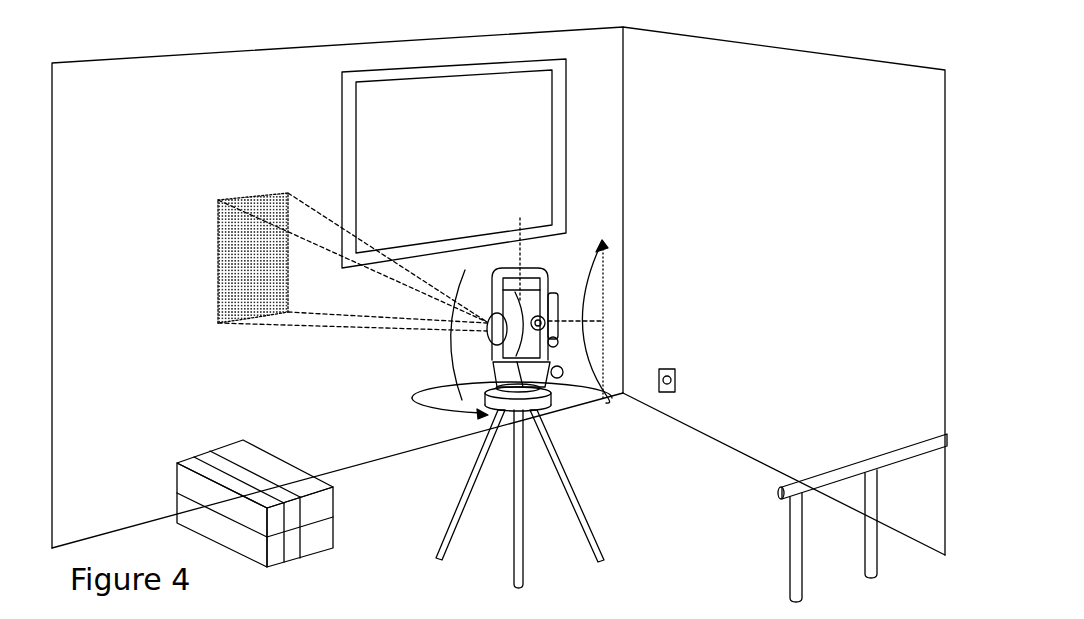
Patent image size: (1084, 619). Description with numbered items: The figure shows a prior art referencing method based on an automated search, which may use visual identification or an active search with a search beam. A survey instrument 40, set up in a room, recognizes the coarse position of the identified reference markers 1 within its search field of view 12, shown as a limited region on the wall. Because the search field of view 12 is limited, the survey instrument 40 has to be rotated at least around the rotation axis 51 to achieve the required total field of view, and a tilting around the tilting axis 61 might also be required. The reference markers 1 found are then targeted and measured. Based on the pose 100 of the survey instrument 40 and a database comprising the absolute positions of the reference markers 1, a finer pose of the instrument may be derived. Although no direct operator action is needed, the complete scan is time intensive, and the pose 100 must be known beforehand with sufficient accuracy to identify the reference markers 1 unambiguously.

The reference markers 1 is at (498, 291).
The search field of view 12 is at (331, 247).
The survey instrument 40 is at (459, 334).
The rotation axis 51 is at (492, 248).
The tilting axis 61 is at (578, 298).
The pose 100 is at (477, 428).